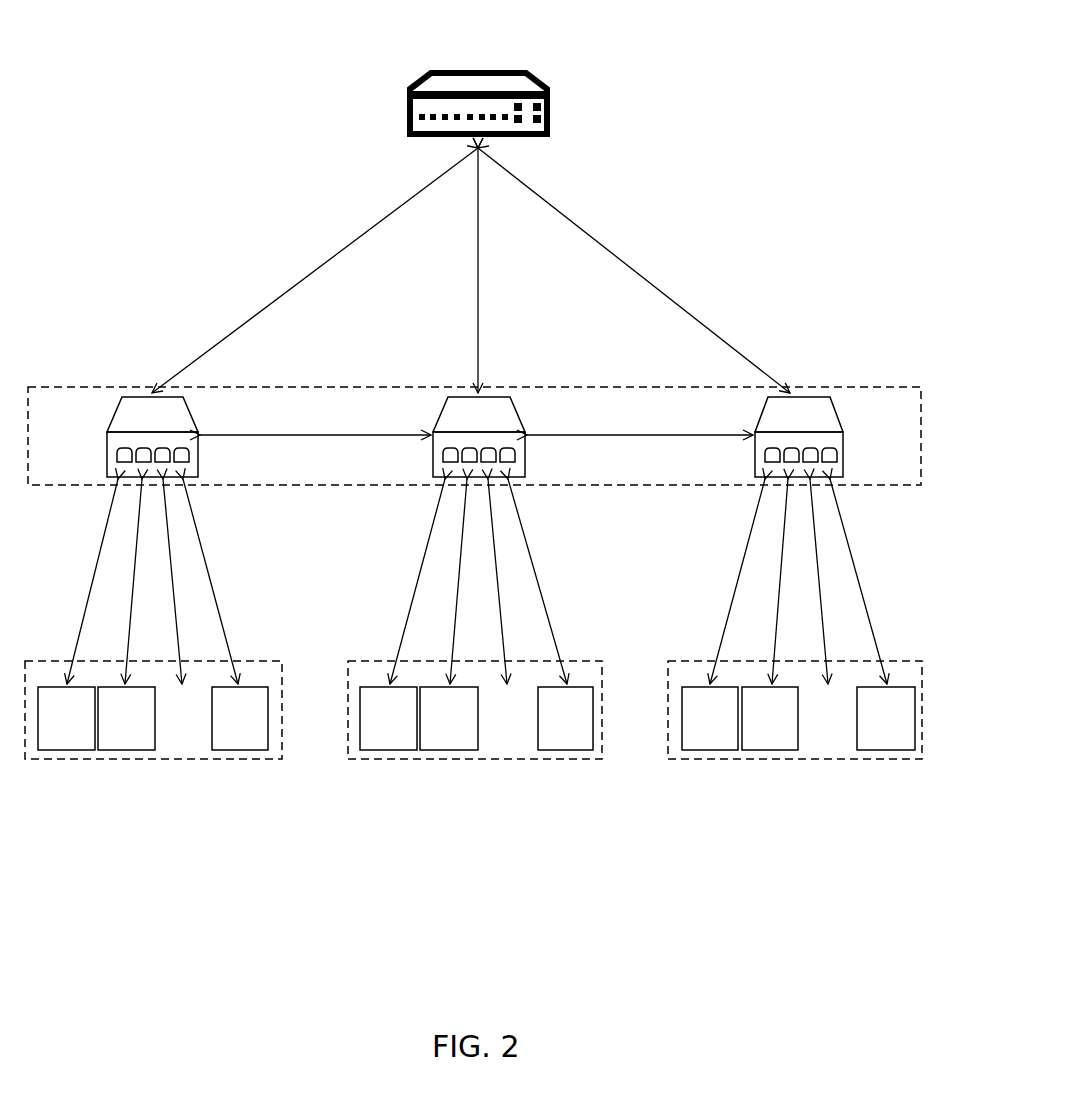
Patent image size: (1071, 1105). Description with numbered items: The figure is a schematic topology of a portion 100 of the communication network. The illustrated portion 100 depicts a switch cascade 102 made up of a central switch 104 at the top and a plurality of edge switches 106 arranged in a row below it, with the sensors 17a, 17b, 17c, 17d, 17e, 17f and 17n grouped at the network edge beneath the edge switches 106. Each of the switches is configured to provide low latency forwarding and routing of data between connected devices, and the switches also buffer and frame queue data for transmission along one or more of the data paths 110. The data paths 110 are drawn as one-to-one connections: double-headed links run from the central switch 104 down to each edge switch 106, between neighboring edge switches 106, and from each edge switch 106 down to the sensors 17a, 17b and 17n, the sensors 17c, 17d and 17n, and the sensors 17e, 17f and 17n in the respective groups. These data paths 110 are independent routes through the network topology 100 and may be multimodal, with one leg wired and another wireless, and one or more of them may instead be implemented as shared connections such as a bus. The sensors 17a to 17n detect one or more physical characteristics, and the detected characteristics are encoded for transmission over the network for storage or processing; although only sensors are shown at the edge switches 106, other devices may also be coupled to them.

The portion of the communication network 100 is at (676, 28).
The switch cascade 102 is at (709, 206).
The central switch 104 is at (442, 68).
The edge switch 106 is at (133, 395).
The data path 110 is at (265, 306).
The sensor 17a is at (66, 718).
The sensor 17b is at (126, 718).
The sensor 17c is at (388, 718).
The sensor 17d is at (449, 718).
The sensor 17e is at (710, 718).
The sensor 17f is at (770, 718).
The sensor 17n is at (563, 718).